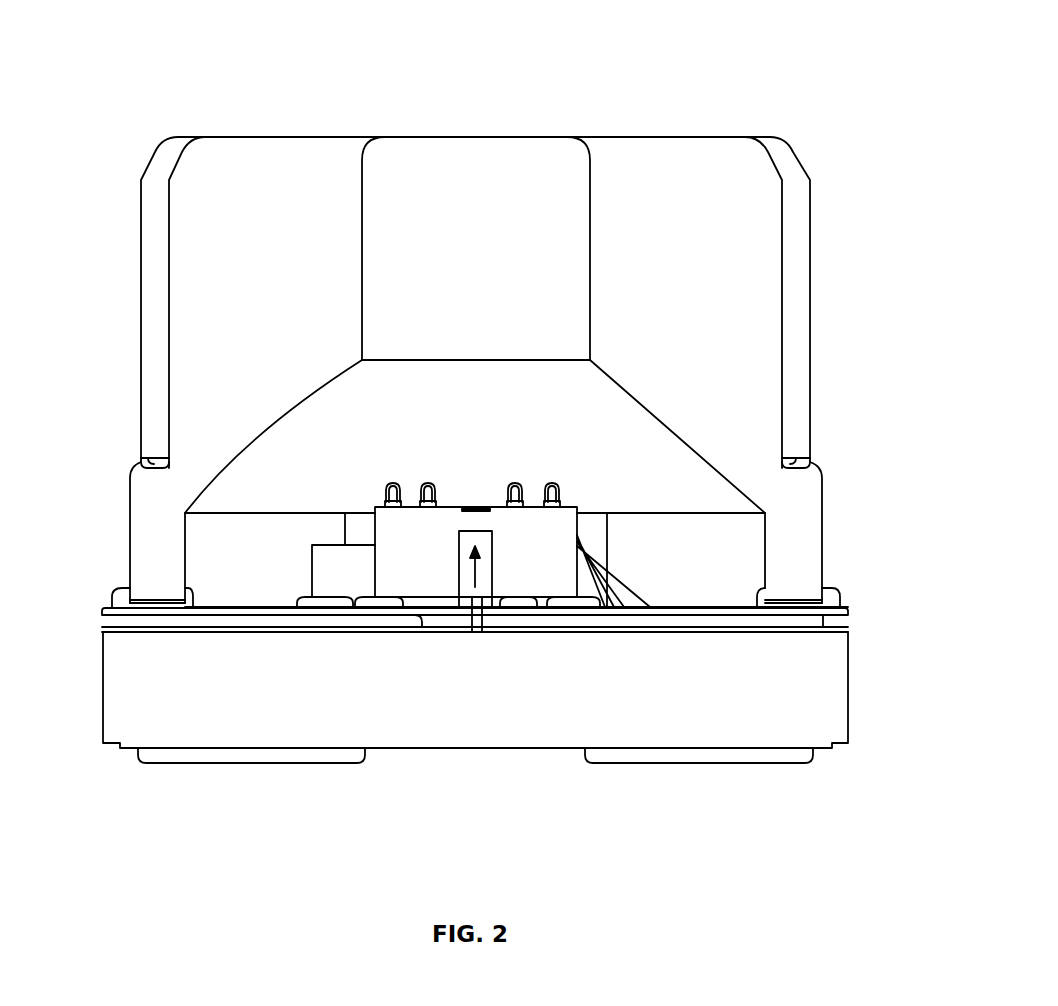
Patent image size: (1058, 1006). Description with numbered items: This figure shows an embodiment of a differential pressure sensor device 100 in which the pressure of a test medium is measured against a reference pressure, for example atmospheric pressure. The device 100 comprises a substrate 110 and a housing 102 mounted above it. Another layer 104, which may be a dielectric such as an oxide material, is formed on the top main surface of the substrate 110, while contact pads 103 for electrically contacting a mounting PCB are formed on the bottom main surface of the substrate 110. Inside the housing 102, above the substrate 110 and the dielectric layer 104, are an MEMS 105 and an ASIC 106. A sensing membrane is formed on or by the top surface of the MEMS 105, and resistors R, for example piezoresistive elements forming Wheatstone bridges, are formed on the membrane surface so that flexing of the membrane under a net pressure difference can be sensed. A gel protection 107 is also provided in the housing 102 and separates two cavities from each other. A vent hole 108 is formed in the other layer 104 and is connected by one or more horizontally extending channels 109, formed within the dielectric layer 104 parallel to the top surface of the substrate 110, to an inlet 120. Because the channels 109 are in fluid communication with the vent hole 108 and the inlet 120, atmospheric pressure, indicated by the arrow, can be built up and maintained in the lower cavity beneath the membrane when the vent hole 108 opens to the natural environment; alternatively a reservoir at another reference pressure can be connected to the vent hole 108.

The differential pressure sensor device 100 is at (814, 101).
The housing 102 is at (802, 405).
The contact pads 103 is at (743, 763).
The other layer 104 is at (848, 612).
The MEMS 105 is at (568, 530).
The ASIC 106 is at (323, 576).
The gel protection 107 is at (622, 397).
The vent hole 108 is at (102, 610).
The channel 109 is at (176, 620).
The substrate 110 is at (848, 682).
The inlet 120 is at (493, 557).
The resistors R is at (477, 505).